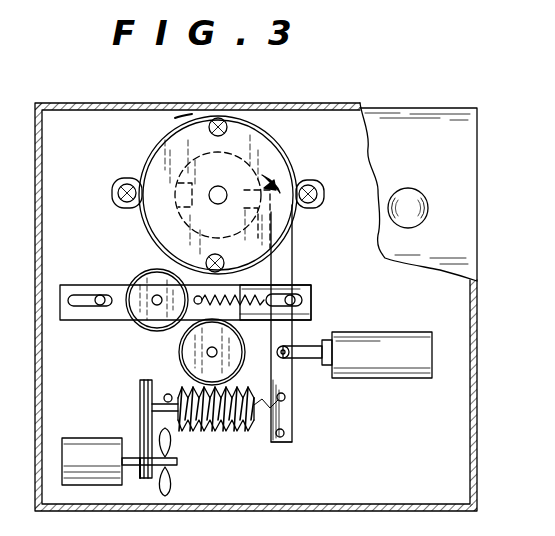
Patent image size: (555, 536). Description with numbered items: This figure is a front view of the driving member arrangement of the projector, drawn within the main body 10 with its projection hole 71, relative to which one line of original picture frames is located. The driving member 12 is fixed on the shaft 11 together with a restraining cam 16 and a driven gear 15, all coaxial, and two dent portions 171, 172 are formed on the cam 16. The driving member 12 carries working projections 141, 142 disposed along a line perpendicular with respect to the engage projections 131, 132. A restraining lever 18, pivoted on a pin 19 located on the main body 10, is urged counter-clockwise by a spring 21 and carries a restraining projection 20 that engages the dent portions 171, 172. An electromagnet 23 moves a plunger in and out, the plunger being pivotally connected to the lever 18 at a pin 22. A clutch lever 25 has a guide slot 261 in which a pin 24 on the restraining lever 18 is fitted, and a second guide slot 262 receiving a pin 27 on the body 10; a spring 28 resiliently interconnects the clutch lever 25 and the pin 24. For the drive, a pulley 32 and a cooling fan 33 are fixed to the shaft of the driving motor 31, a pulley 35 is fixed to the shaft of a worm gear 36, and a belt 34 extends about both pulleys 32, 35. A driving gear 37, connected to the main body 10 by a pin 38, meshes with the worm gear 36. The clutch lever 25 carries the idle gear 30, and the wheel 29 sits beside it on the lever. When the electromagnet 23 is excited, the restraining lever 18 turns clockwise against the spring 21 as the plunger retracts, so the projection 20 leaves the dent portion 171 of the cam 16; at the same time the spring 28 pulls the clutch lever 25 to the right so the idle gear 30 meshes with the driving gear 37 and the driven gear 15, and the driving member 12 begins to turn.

The main body 10 is at (455, 134).
The projection hole 71 is at (428, 208).
The driving member 12 is at (258, 118).
The driven gear 15 is at (185, 120).
The restraining cam 16 is at (286, 132).
The dent portion 171 is at (266, 162).
The restraining projection 20 is at (272, 184).
The dent portion 172 is at (176, 222).
The shaft 11 is at (210, 190).
The engage projection 131 is at (224, 117).
The engage projection 132 is at (208, 255).
The working projection 142 is at (112, 193).
The working projection 141 is at (324, 195).
The restraining lever 18 is at (292, 262).
The pin 19 is at (284, 434).
The spring 21 is at (285, 397).
The clutch lever 25 is at (110, 320).
The guide slot 262 is at (82, 296).
The pin 27 is at (102, 296).
The pin 24 is at (290, 292).
The guide slot 261 is at (303, 312).
The spring 28 is at (232, 318).
The wheel 29 is at (150, 312).
The idle gear 30 is at (160, 306).
The driving gear 37 is at (232, 362).
The pin 38 is at (172, 398).
The worm gear 36 is at (212, 432).
The pulley 35 is at (140, 392).
The belt 34 is at (138, 438).
The pulley 32 is at (140, 470).
The driving motor 31 is at (80, 446).
The cooling fan 33 is at (172, 478).
The pin 22 is at (292, 346).
The electromagnet 23 is at (400, 344).